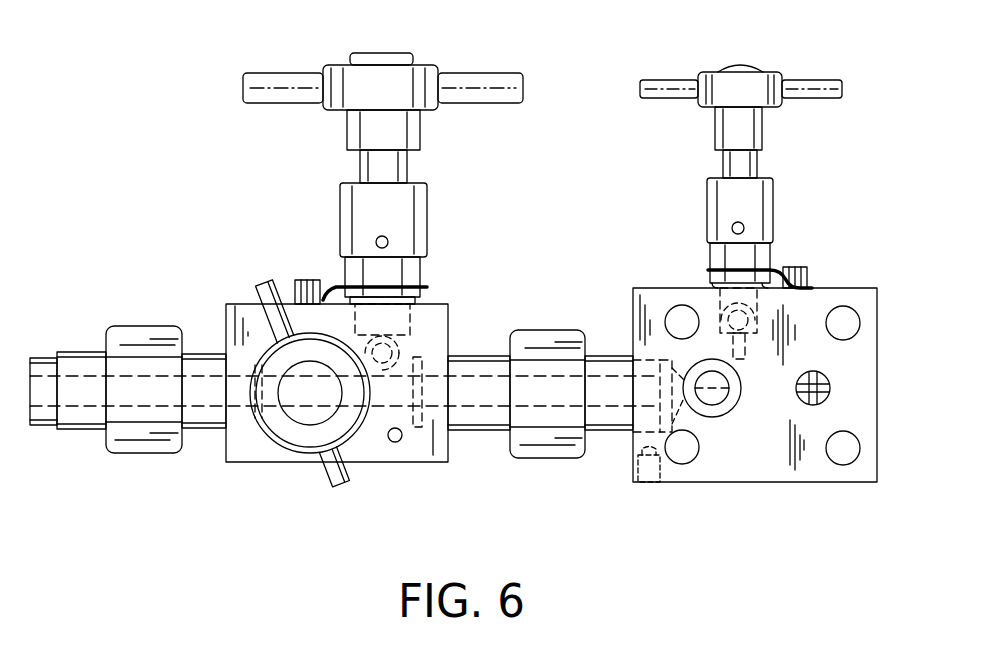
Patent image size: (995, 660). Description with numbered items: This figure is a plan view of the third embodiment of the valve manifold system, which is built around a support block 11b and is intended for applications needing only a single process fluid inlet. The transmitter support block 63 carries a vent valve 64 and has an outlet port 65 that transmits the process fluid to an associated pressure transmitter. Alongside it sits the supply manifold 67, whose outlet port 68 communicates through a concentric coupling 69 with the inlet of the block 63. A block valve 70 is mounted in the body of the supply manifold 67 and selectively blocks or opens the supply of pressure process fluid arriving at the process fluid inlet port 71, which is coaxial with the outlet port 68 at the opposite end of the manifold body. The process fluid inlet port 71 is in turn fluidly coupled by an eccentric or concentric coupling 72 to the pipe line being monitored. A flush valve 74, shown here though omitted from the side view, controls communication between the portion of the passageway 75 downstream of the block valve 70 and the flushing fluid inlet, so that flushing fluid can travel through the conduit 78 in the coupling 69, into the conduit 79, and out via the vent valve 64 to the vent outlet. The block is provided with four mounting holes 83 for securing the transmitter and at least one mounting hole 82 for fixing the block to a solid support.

The support block 11b is at (836, 266).
The transmitter support block 63 is at (870, 383).
The vent valve 64 is at (712, 202).
The outlet port 65 is at (720, 395).
The supply manifold 67 is at (435, 317).
The outlet port 68 is at (447, 463).
The concentric coupling 69 is at (530, 343).
The block valve 70 is at (265, 288).
The process fluid inlet port 71 is at (242, 423).
The eccentric or concentric coupling 72 is at (147, 338).
The flush valve 74 is at (355, 208).
The passageway 75 is at (382, 400).
The conduit 78 is at (483, 407).
The conduit 79 is at (680, 405).
The mounting hole 82 is at (643, 482).
The mounting holes 83 is at (675, 304).